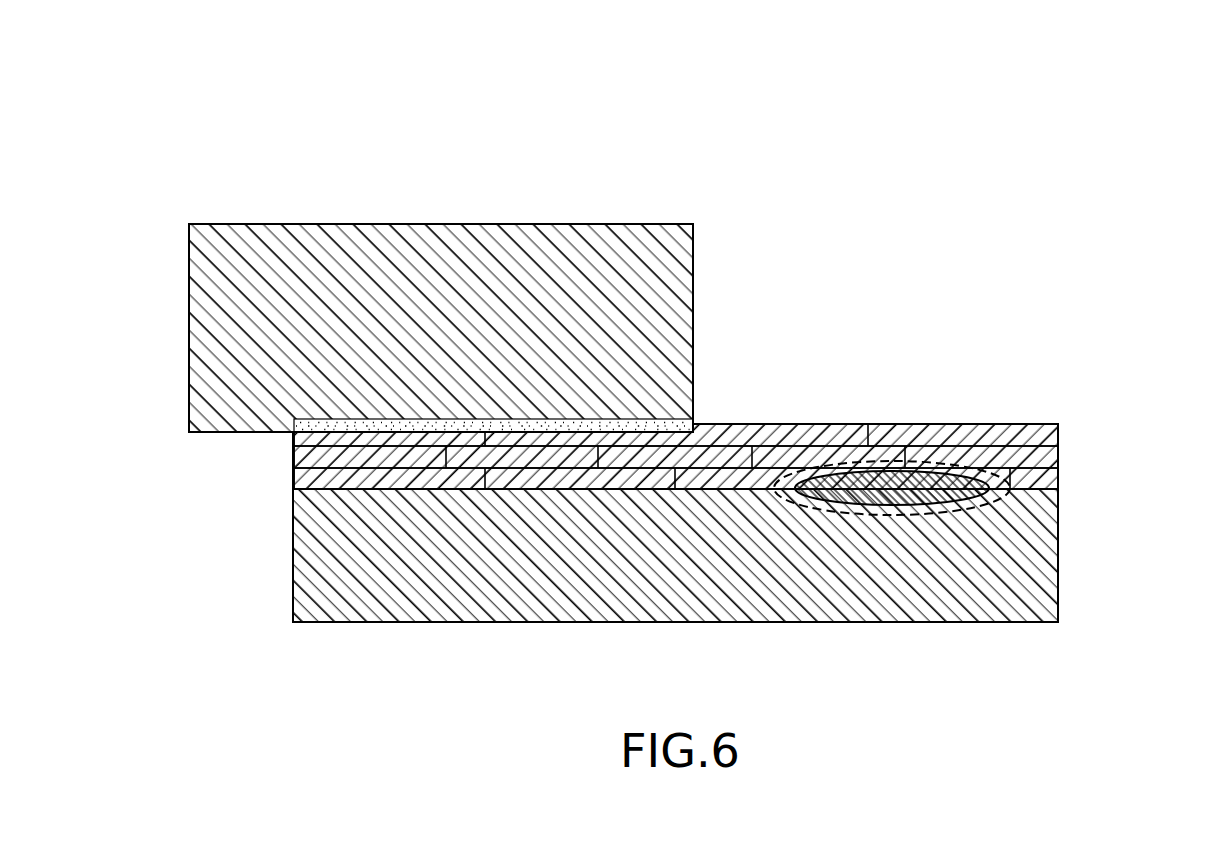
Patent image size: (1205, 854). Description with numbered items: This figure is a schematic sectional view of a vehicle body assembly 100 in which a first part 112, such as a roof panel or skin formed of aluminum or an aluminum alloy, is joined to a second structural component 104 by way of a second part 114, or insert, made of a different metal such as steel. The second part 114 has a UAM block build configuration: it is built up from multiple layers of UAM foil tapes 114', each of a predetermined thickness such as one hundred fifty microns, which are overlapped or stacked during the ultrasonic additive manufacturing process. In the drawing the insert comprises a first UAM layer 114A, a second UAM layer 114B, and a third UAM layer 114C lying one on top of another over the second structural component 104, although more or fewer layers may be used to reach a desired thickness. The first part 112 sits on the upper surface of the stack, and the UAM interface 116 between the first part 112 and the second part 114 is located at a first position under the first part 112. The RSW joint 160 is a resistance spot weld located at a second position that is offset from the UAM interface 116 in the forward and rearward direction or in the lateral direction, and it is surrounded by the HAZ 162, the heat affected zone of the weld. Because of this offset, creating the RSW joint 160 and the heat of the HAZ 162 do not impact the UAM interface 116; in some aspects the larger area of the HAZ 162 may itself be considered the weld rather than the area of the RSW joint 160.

The vehicle body assembly 100 is at (147, 141).
The first part 112 is at (408, 262).
The UAM interface 116 is at (705, 418).
The second part 114 is at (741, 456).
The first UAM layer 114A is at (1062, 437).
The second UAM layer 114B is at (1060, 457).
The third UAM layer 114C is at (1060, 478).
The foil tapes 114' is at (591, 419).
The second structural component 104 is at (397, 596).
The RSW joint 160 is at (975, 505).
The HAZ 162 is at (800, 505).